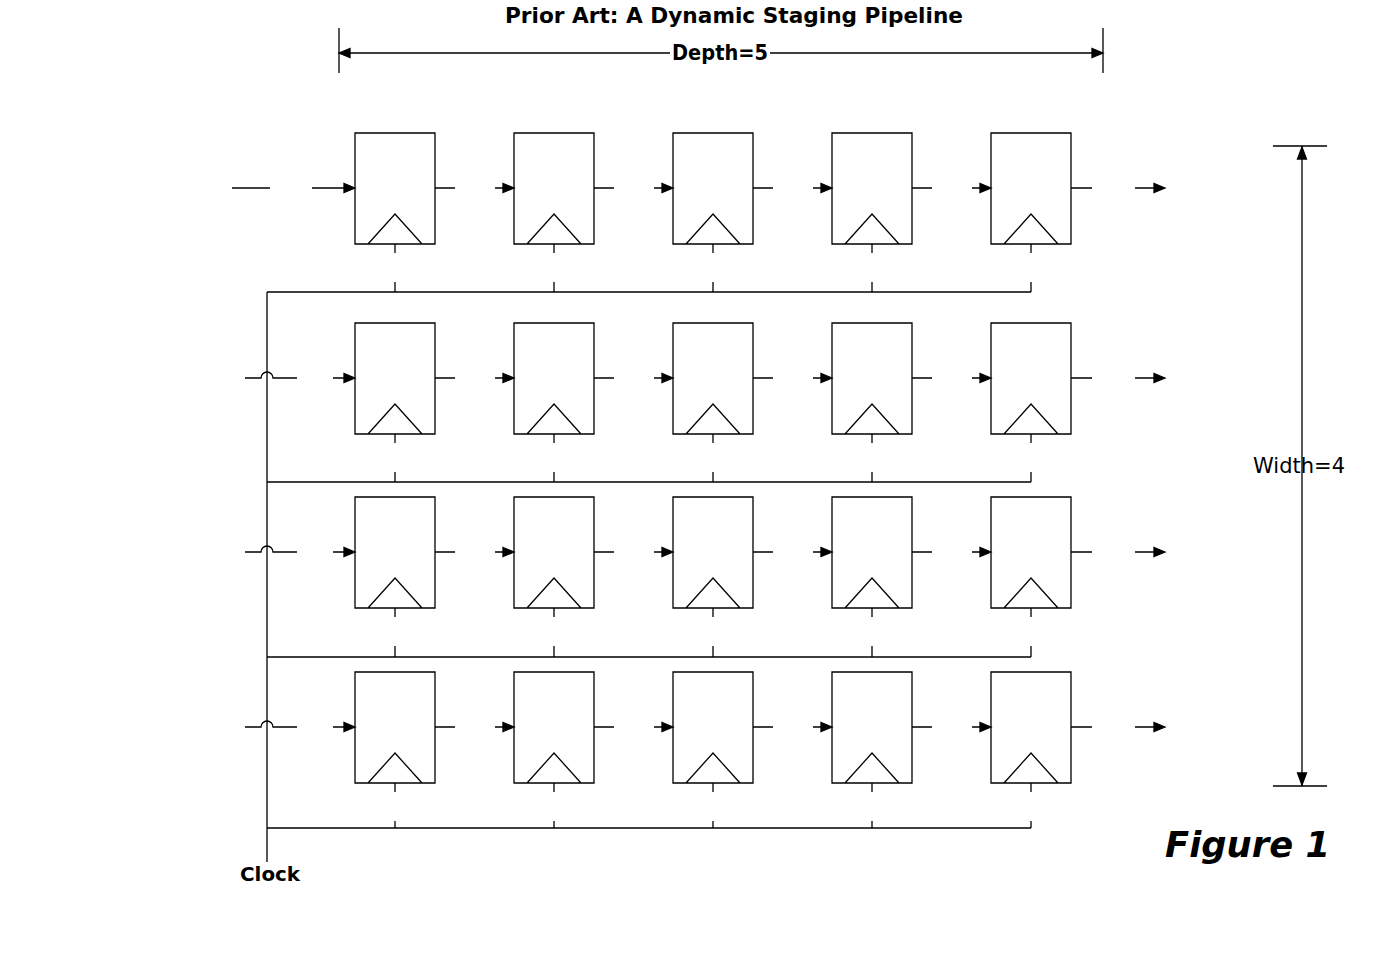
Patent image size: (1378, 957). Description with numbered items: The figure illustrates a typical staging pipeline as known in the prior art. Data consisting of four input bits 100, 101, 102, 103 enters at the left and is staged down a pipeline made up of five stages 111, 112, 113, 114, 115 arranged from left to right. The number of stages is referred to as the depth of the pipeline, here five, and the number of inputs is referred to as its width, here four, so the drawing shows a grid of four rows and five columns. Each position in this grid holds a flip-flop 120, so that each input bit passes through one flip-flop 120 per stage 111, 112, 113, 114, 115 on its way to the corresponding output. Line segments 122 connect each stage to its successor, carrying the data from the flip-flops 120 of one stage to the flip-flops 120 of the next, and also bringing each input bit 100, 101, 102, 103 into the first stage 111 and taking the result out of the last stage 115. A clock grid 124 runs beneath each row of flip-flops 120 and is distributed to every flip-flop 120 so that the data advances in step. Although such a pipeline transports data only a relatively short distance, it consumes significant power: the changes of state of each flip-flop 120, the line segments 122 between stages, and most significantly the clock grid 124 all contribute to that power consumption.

The input bit 100 is at (220, 187).
The input bit 101 is at (233, 377).
The input bit 102 is at (233, 551).
The input bit 103 is at (233, 726).
The stage 111 is at (395, 430).
The stage 112 is at (554, 430).
The stage 113 is at (713, 430).
The stage 114 is at (872, 430).
The stage 115 is at (1031, 430).
The flip-flop 120 is at (713, 430).
The line segment 122 is at (762, 458).
The clock grid 124 is at (713, 536).